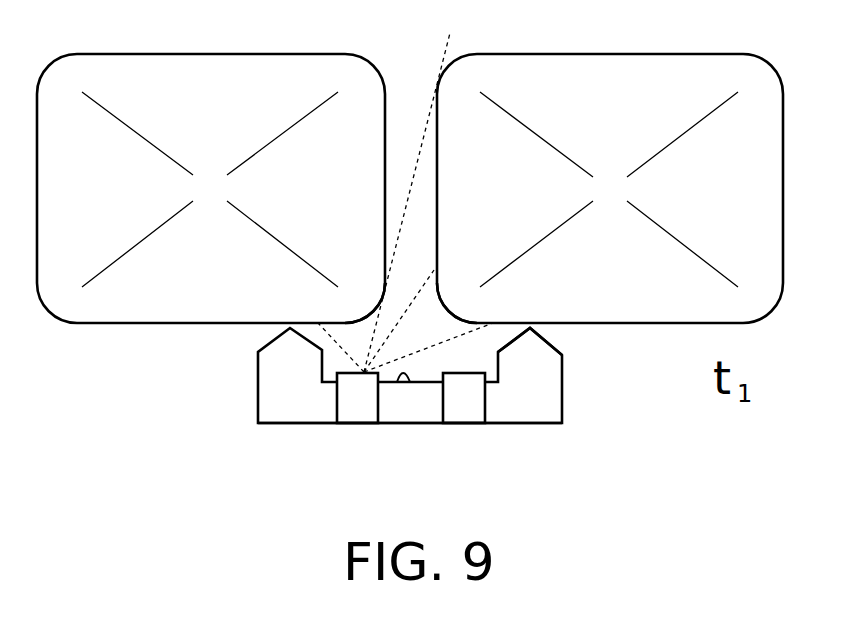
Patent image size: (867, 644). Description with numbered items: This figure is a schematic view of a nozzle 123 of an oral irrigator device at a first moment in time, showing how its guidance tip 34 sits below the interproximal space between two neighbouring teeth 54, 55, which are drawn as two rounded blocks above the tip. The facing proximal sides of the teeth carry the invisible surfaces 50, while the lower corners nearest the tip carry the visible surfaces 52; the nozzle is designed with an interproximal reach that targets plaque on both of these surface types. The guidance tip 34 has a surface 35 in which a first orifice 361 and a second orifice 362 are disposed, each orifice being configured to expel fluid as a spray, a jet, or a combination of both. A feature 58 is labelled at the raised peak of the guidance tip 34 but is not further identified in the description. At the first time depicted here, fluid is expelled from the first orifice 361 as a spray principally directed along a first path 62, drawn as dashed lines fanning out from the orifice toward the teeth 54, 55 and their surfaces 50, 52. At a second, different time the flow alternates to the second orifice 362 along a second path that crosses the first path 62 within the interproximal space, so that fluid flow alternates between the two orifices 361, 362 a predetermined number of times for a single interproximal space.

The invisible surfaces 50 is at (385, 190).
The tooth 55 is at (225, 103).
The tooth 54 is at (625, 103).
The visible surfaces 52 is at (357, 323).
The guidance tip 34 is at (543, 411).
The raised peak 58 is at (548, 332).
The first orifice 361 is at (360, 411).
The second orifice 362 is at (460, 411).
The surface 35 is at (405, 375).
The first path 62 is at (371, 359).
The nozzle 123 is at (597, 422).